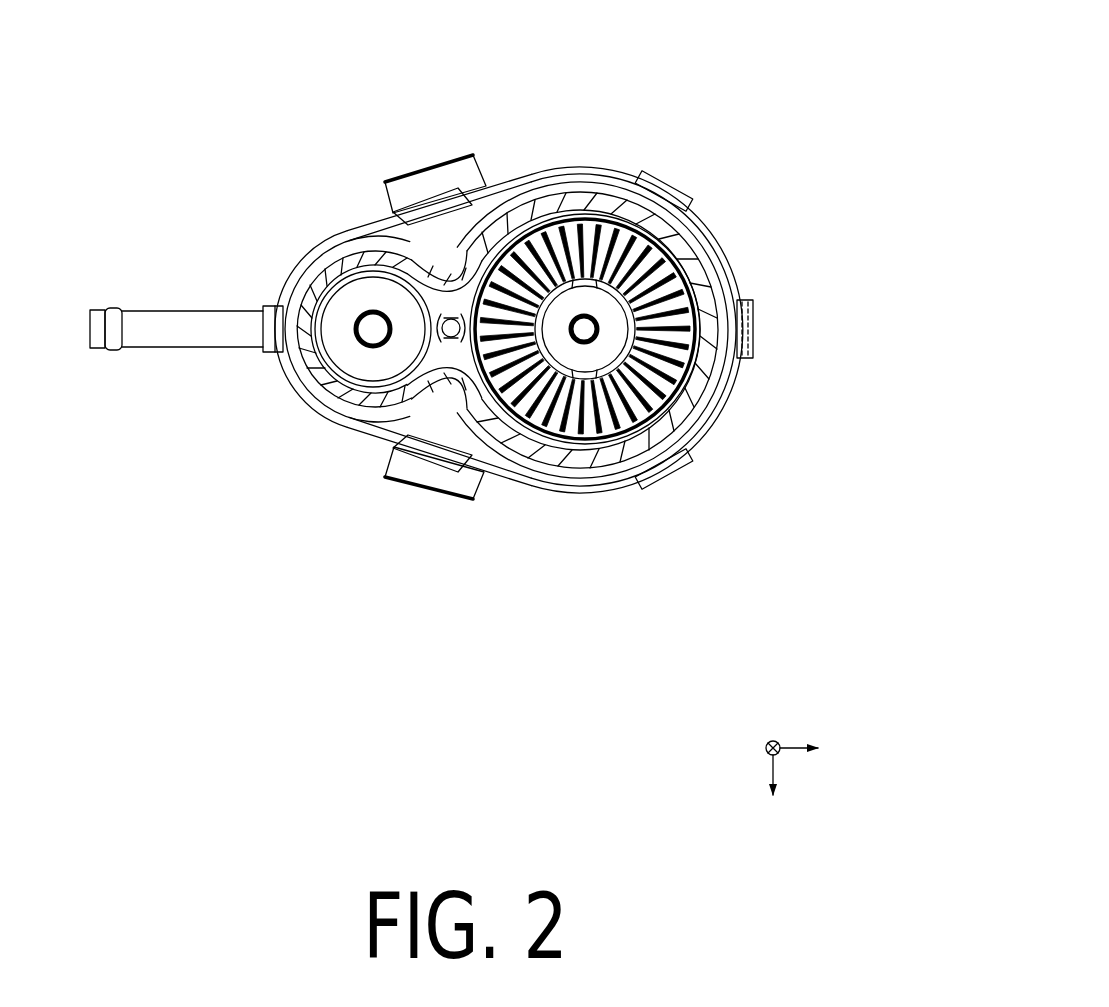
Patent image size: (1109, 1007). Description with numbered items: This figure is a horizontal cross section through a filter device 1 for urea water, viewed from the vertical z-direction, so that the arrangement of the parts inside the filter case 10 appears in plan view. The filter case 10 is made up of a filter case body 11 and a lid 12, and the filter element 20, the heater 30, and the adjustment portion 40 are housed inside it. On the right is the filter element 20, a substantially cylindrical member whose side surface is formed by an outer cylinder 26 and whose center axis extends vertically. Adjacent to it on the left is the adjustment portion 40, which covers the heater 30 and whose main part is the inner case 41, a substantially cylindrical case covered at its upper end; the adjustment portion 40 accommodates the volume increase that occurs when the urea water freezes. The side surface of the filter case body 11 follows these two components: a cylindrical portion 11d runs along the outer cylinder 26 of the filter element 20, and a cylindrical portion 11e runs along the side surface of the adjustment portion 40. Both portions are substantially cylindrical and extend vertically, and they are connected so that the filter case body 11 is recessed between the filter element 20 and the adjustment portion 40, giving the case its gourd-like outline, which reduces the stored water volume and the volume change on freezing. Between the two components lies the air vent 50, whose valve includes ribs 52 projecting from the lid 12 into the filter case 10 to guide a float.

The filter device 1 is at (779, 28).
The filter case 10 is at (800, 185).
The filter case body 11 is at (703, 257).
The cylindrical portion 11d is at (712, 315).
The cylindrical portion 11e is at (385, 396).
The lid 12 is at (703, 221).
The filter element 20 is at (660, 426).
The outer cylinder 26 is at (683, 400).
The heater 30 is at (365, 352).
The adjustment portion 40 is at (356, 275).
The inner case 41 is at (342, 293).
The air vent 50 is at (455, 311).
The ribs 52 is at (456, 315).